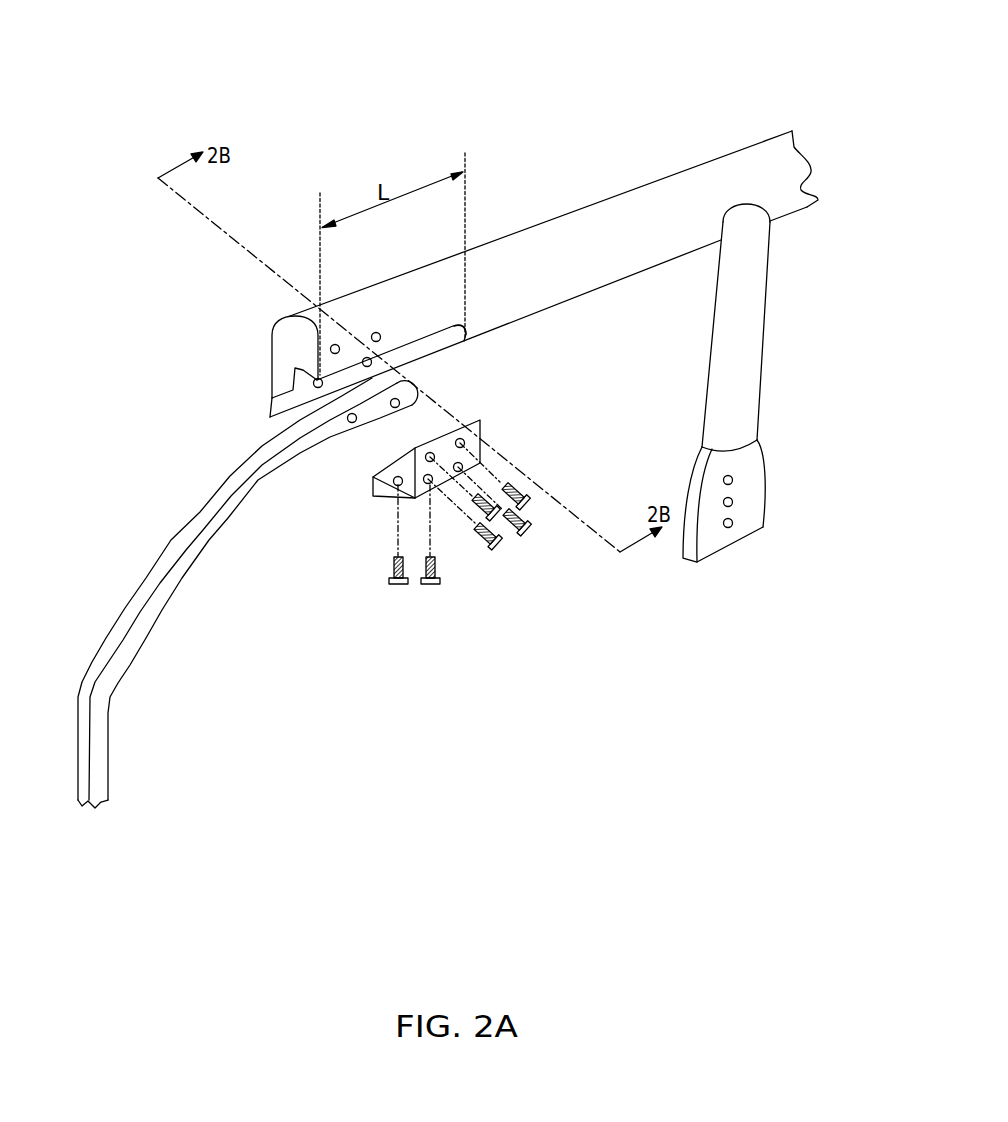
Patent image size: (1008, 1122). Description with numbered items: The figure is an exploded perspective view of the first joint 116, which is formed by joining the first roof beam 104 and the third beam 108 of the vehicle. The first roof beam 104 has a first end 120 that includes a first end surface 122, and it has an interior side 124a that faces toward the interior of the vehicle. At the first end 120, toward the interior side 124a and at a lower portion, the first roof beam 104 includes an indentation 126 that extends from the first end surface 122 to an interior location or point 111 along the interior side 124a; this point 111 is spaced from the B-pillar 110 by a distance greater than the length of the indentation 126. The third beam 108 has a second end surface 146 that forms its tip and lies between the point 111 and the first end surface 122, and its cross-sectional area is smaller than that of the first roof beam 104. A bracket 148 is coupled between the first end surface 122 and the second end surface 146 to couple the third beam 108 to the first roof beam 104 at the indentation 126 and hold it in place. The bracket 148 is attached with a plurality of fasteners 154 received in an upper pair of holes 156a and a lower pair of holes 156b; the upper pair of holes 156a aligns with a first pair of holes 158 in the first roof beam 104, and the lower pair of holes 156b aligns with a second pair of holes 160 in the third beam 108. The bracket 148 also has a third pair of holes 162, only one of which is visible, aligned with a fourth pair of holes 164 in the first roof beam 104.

The first roof beam 104 is at (643, 185).
The third beam 108 is at (114, 611).
The B-pillar 110 is at (728, 442).
The interior location or point 111 is at (463, 337).
The first joint 116 is at (442, 50).
The first end 120 is at (272, 348).
The first end surface 122 is at (266, 375).
The interior side 124a is at (797, 195).
The indentation 126 is at (426, 341).
The second end surface 146 is at (400, 408).
The bracket 148 is at (483, 425).
The fasteners 154 is at (430, 585).
The upper pair of holes 156a is at (434, 453).
The lower pair of holes 156b is at (457, 471).
The first pair of holes 158 is at (335, 344).
The second pair of holes 160 is at (351, 423).
The third pair of holes 162 is at (375, 490).
The fourth pair of holes 164 is at (290, 393).